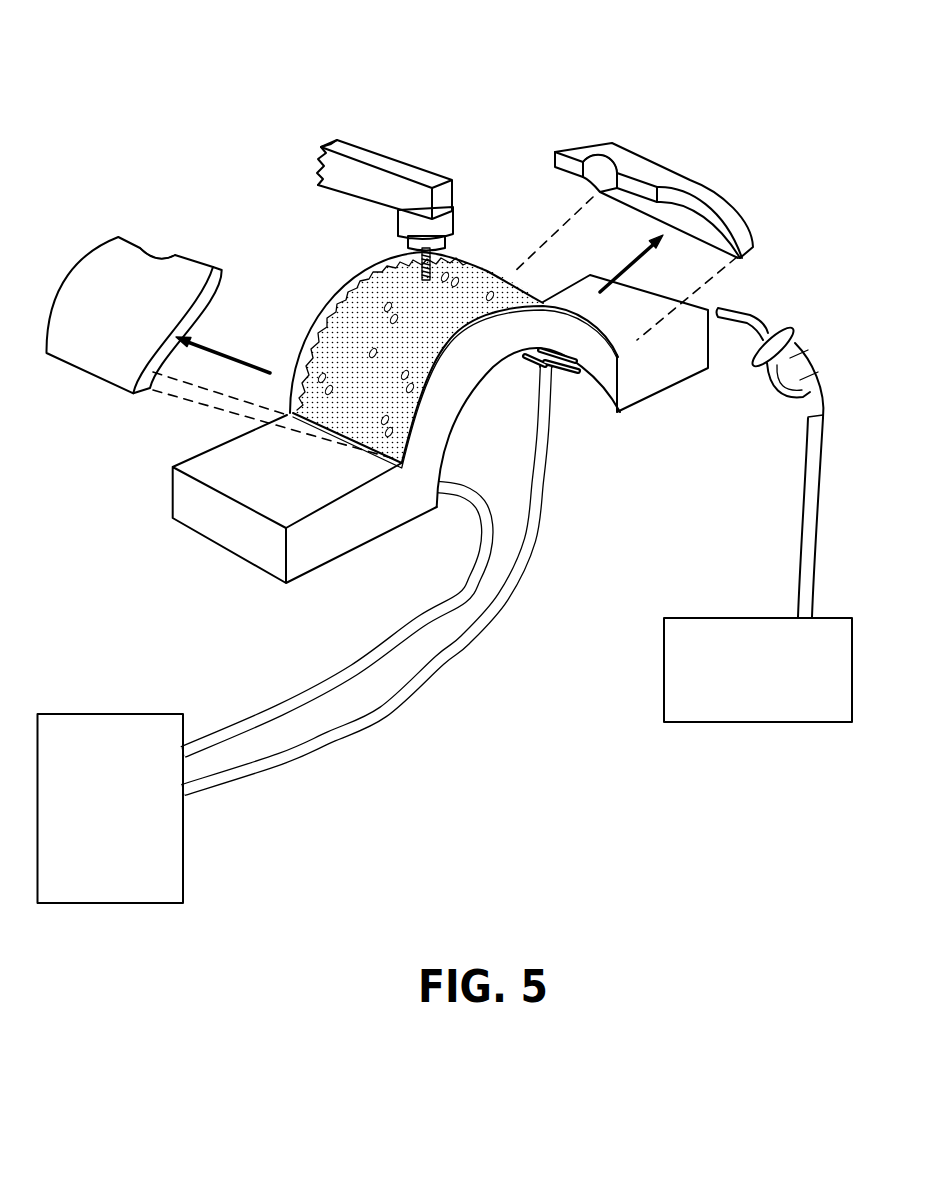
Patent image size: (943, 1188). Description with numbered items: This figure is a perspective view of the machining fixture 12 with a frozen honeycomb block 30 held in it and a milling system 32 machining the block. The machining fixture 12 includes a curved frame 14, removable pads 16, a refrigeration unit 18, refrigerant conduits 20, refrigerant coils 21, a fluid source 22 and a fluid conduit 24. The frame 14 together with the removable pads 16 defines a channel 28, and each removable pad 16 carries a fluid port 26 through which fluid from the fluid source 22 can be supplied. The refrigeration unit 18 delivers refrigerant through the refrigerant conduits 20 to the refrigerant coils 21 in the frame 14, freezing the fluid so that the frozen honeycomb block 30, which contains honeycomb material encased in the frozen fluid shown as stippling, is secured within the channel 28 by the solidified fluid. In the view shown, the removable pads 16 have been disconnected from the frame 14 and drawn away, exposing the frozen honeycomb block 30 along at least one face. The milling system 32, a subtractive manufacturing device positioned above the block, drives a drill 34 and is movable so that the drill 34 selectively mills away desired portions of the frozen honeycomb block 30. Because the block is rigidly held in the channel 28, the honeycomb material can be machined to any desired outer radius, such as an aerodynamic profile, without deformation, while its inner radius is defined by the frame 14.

The machining fixture 12 is at (336, 860).
The frame 14 is at (437, 404).
The removable pads 16 is at (121, 258).
The refrigeration unit 18 is at (120, 819).
The refrigerant conduits 20 is at (262, 719).
The refrigerant coils 21 is at (579, 373).
The fluid source 22 is at (768, 681).
The fluid conduit 24 is at (806, 538).
The fluid port 26 is at (157, 254).
The channel 28 is at (318, 356).
The frozen honeycomb block 30 is at (318, 405).
The milling system 32 is at (425, 154).
The drill 34 is at (420, 278).